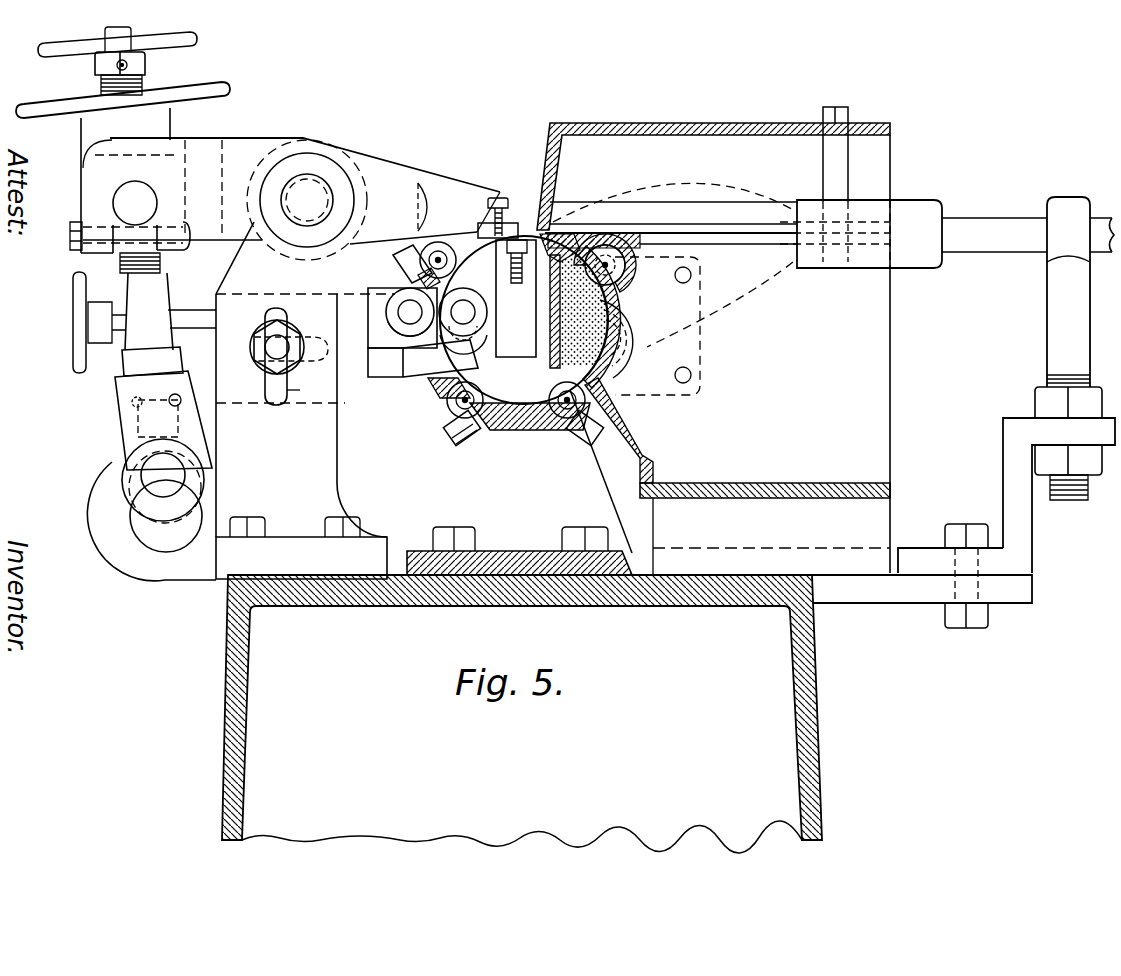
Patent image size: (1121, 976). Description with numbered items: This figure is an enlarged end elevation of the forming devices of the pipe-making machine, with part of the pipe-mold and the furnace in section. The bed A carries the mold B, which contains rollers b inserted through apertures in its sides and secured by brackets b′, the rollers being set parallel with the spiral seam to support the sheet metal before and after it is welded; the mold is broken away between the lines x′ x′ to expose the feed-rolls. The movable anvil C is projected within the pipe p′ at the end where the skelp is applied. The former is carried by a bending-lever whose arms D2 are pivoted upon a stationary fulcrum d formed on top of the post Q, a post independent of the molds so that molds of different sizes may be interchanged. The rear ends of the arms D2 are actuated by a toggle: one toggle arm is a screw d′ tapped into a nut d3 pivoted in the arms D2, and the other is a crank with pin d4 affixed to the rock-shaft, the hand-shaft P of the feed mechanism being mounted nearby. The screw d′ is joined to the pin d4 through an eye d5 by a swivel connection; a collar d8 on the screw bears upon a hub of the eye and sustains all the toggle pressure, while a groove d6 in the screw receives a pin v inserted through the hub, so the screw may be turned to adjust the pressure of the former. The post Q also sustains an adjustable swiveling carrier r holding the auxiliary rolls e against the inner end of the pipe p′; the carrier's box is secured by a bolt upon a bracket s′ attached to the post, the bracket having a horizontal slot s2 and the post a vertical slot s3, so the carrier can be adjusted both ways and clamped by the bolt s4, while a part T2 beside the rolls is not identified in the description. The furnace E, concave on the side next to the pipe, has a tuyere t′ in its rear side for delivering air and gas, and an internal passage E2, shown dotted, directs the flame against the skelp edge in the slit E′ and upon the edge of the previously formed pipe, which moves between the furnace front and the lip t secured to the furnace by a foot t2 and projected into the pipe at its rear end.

The bed A is at (228, 675).
The post Q is at (222, 270).
The fulcrum d is at (307, 200).
The lever-arms D2 is at (375, 170).
The nut d3 is at (88, 210).
The screw d′ is at (168, 262).
The collar d8 is at (124, 363).
The eye d5 is at (122, 405).
The groove d6 is at (158, 418).
The pin v is at (181, 404).
The pin d4 is at (142, 473).
The hand-shaft P is at (145, 552).
The bracket s′ is at (305, 400).
The bolt s4 is at (262, 362).
The horizontal slot s2 is at (312, 338).
The vertical slot s3 is at (305, 388).
The roller bracket T2 is at (388, 334).
The swiveling carrier r is at (388, 340).
The auxiliary rolls e is at (462, 292).
The break lines x′ is at (398, 286).
The anvil C is at (524, 313).
The lip t is at (584, 310).
The pipe p′ is at (470, 372).
The rollers b is at (455, 418).
The brackets b′ is at (461, 438).
The mold B is at (518, 432).
The furnace E is at (616, 135).
The slit E′ is at (664, 218).
The internal passage E2 is at (731, 195).
The foot t2 is at (702, 358).
The tuyere t′ is at (912, 210).